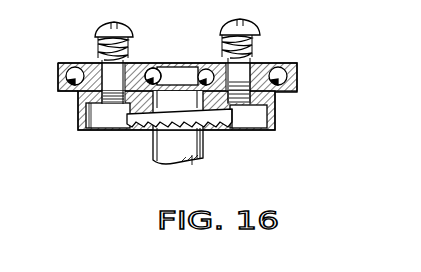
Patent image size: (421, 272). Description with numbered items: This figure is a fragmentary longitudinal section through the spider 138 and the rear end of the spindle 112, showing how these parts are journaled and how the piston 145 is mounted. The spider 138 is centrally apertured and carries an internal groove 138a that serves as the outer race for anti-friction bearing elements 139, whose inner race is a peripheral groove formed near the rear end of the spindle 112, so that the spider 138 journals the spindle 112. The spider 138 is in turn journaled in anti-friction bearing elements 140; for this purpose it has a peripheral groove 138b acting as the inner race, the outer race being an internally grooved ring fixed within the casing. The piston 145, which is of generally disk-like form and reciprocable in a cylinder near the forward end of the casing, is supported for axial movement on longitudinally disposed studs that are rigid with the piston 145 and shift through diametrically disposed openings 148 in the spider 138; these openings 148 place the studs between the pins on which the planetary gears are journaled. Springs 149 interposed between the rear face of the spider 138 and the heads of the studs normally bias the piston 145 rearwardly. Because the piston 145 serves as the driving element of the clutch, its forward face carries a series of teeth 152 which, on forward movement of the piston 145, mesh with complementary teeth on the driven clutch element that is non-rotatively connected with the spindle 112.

The spindle 112 is at (192, 162).
The spider 138 is at (152, 65).
The internal groove 138a is at (157, 68).
The peripheral groove 138b is at (277, 66).
The anti-friction bearing elements 139 is at (210, 68).
The anti-friction bearing elements 140 is at (297, 74).
The piston 145 is at (80, 122).
The openings 148 is at (98, 62).
The springs 149 is at (252, 46).
The teeth 152 is at (147, 129).